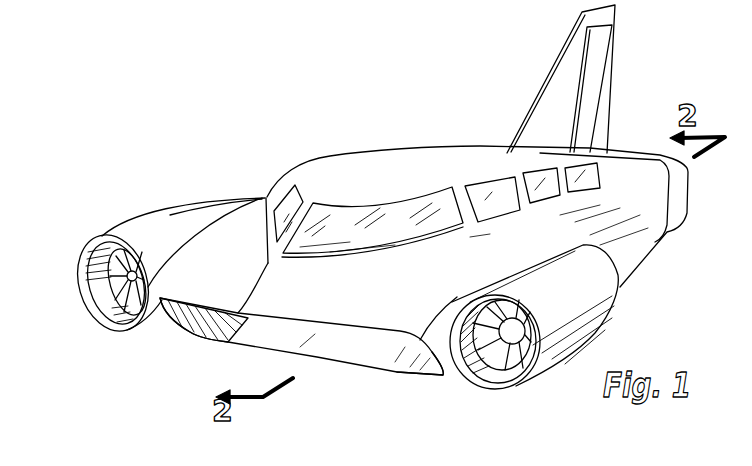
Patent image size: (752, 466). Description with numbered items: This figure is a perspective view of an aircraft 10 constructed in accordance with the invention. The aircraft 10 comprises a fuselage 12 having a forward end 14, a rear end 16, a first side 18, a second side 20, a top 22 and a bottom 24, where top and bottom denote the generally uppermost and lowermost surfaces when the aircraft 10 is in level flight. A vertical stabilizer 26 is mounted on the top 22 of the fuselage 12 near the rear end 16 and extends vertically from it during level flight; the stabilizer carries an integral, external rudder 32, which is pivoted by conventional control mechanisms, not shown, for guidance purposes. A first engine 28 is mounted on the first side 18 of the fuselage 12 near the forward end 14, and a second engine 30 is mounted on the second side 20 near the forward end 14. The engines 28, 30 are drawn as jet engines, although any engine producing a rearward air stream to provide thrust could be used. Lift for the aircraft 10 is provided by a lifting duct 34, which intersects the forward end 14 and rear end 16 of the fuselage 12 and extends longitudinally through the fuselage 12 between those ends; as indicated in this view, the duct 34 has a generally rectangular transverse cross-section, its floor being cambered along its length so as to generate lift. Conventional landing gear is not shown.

The aircraft 10 is at (369, 224).
The fuselage 12 is at (262, 201).
The forward end 14 is at (243, 320).
The rear end 16 is at (648, 147).
The first side 18 is at (636, 240).
The second side 20 is at (201, 224).
The top 22 is at (404, 160).
The bottom 24 is at (388, 377).
The vertical stabilizer 26 is at (584, 79).
The first engine 28 is at (491, 374).
The second engine 30 is at (108, 283).
The rudder 32 is at (606, 47).
The lifting duct 34 is at (355, 345).